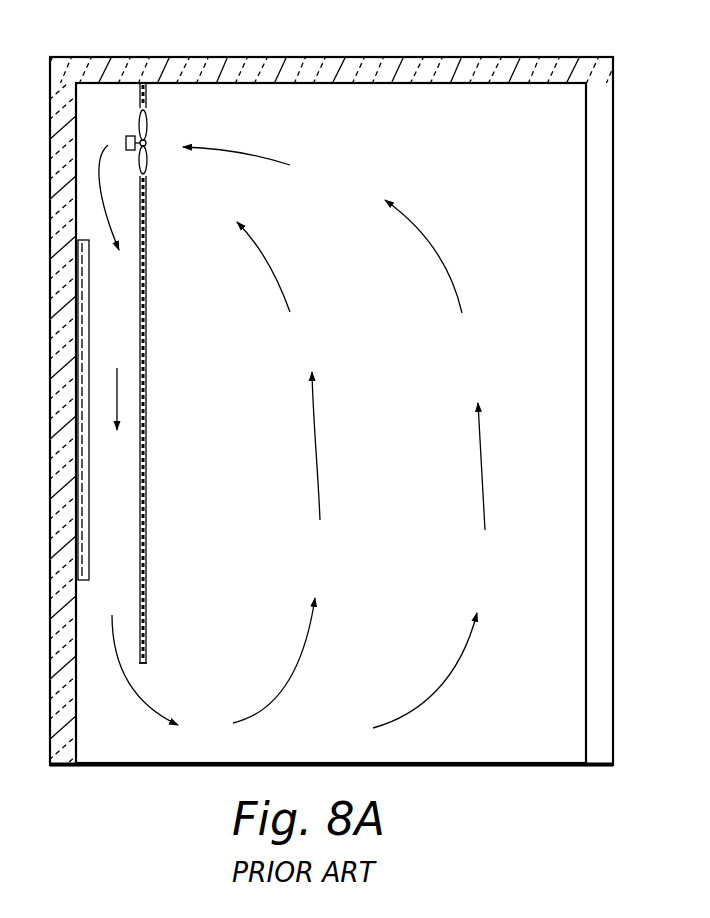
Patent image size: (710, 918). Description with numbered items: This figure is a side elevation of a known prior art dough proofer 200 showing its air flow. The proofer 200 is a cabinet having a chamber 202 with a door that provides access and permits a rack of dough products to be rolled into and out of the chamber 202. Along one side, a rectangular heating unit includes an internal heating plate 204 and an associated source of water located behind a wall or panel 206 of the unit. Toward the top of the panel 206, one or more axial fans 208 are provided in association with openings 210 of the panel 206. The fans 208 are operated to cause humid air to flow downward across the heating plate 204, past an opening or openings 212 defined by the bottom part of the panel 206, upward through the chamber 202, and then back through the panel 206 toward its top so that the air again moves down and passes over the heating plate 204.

The dough proofer 200 is at (630, 168).
The chamber 202 is at (495, 335).
The heating plate 204 is at (86, 502).
The panel 206 is at (146, 340).
The axial fan 208 is at (148, 120).
The opening 210 is at (148, 172).
The opening 212 is at (130, 678).